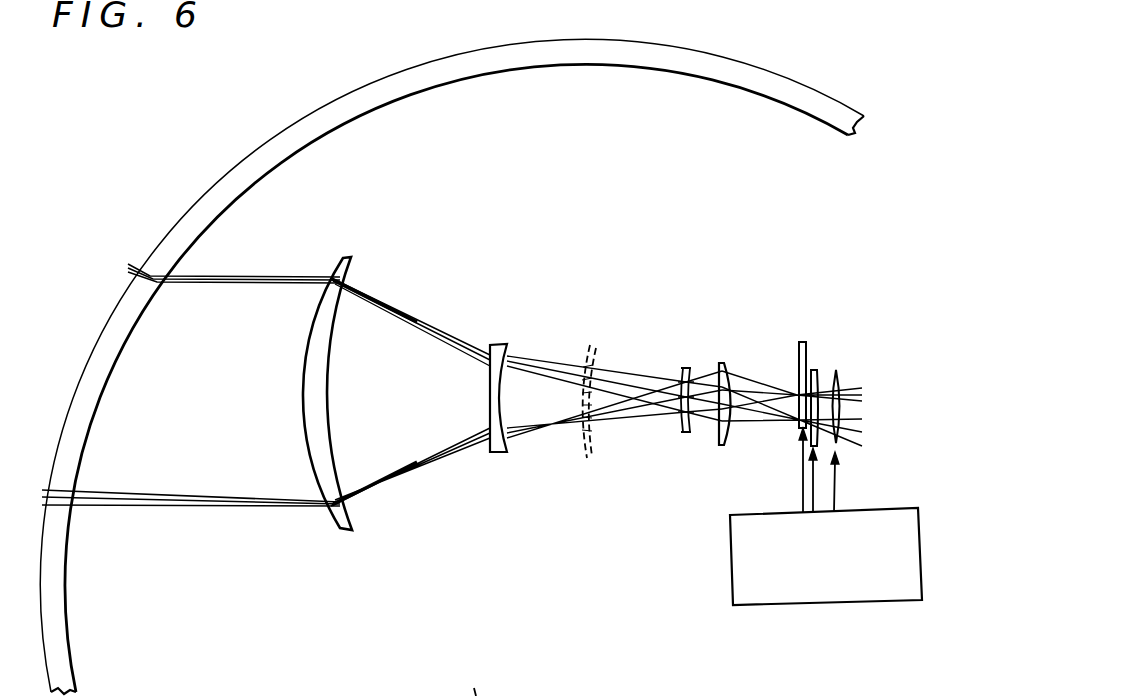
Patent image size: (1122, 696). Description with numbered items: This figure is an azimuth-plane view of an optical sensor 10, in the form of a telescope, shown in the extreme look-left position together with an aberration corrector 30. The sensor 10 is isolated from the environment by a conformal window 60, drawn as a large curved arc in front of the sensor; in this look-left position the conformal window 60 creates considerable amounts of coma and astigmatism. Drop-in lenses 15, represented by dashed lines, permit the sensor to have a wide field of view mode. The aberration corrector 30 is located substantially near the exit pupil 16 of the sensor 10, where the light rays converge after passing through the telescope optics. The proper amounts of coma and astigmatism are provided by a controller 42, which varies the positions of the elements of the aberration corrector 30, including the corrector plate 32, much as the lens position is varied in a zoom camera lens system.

The conformal window 60 is at (204, 199).
The optical sensor 10 is at (452, 280).
The drop-in lenses 15 is at (590, 343).
The exit pupil 16 is at (721, 447).
The aberration corrector 30 is at (798, 323).
The controller 42 is at (730, 577).
The corrector plate 32 is at (477, 677).